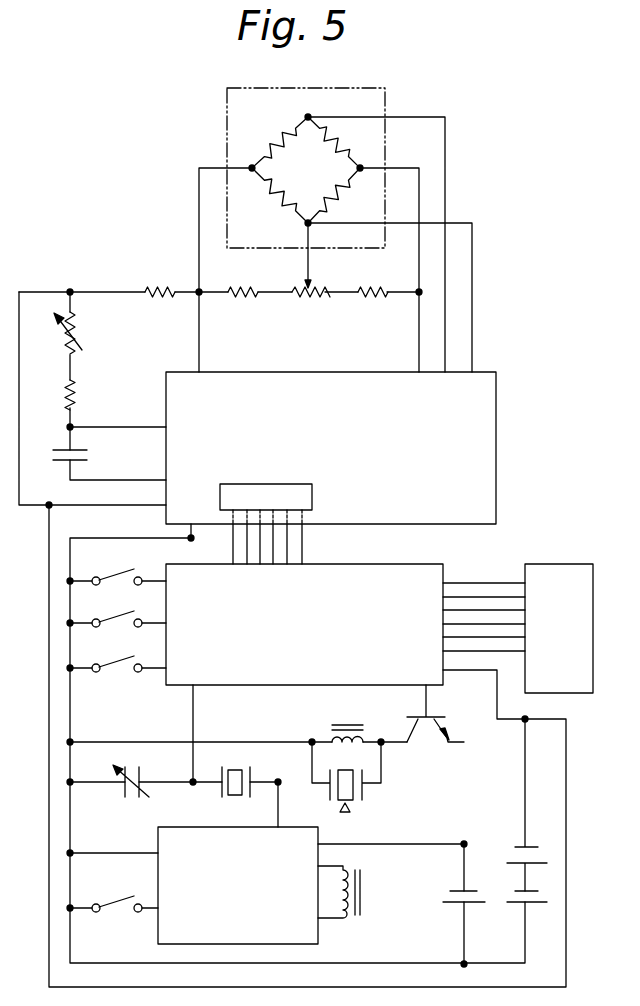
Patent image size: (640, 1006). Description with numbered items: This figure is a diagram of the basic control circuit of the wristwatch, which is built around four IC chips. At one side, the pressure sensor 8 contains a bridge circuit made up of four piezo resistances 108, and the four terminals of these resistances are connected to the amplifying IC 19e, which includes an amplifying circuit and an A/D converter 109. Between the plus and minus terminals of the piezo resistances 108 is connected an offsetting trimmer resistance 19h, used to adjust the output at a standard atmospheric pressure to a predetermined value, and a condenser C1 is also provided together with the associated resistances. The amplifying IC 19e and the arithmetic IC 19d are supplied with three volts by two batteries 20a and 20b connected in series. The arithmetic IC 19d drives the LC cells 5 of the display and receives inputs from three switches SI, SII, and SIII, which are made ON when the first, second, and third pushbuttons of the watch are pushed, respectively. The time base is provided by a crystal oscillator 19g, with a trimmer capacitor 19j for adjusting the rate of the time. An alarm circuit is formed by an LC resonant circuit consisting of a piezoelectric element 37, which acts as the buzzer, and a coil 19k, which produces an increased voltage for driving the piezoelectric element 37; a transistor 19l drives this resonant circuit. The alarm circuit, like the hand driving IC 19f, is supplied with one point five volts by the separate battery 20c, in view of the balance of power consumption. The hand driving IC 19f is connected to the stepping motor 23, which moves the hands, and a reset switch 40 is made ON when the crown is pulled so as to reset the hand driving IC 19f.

The pressure sensor 8 is at (226, 96).
The piezo resistances 108 is at (270, 138).
The offsetting trimmer resistance 19h is at (298, 285).
The transistor 19l is at (82, 324).
The condenser C1 is at (89, 455).
The amplifying IC 19e is at (497, 386).
The A/D converter 109 is at (314, 497).
The arithmetic IC 19d is at (426, 564).
The LC cells 5 is at (566, 564).
The switch SI is at (112, 574).
The switch SII is at (112, 617).
The switch SIII is at (112, 661).
The trimmer capacitor 19j is at (136, 766).
The crystal oscillator 19g is at (216, 772).
The coil 19k is at (325, 738).
The piezoelectric element 37 is at (322, 795).
The hand driving IC 19f is at (206, 827).
The reset switch 40 is at (116, 896).
The stepping motor 23 is at (344, 860).
The battery 20a is at (511, 855).
The battery 20b is at (505, 903).
The battery 20c is at (442, 903).